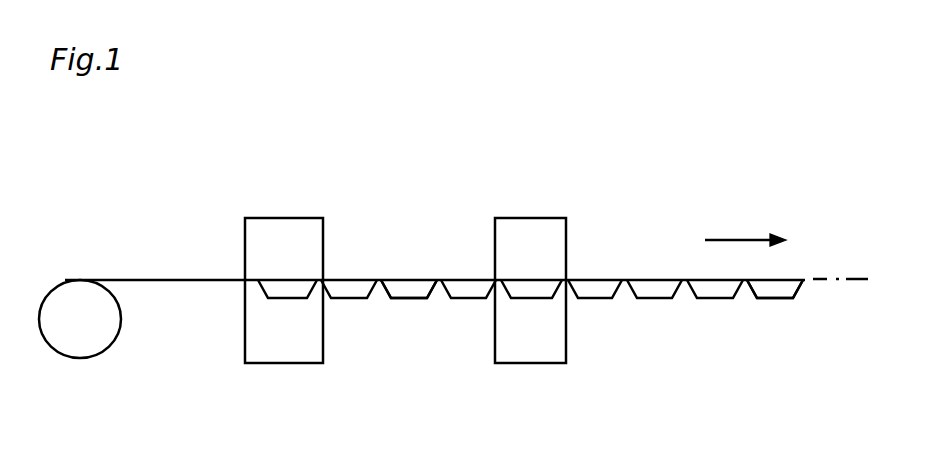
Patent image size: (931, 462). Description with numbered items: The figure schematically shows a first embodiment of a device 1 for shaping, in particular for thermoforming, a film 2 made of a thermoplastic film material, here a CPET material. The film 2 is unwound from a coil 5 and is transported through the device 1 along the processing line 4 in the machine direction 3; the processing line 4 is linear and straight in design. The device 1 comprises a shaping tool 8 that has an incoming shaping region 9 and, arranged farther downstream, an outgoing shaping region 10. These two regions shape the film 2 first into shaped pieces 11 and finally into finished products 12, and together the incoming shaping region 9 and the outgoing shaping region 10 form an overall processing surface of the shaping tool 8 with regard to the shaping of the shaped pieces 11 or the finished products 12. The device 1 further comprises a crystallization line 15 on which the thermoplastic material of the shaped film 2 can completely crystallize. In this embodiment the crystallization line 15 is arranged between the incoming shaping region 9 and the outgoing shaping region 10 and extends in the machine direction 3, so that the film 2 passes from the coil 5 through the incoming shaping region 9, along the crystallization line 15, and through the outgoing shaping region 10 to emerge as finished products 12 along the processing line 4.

The device 1 is at (566, 62).
The film 2 is at (163, 278).
The machine direction 3 is at (735, 240).
The processing line 4 is at (854, 278).
The coil 5 is at (61, 357).
The shaping tool 8 is at (224, 392).
The incoming shaping region 9 is at (283, 218).
The outgoing shaping region 10 is at (527, 218).
The shaped pieces 11 is at (408, 298).
The finished products 12 is at (763, 298).
The crystallization line 15 is at (409, 216).